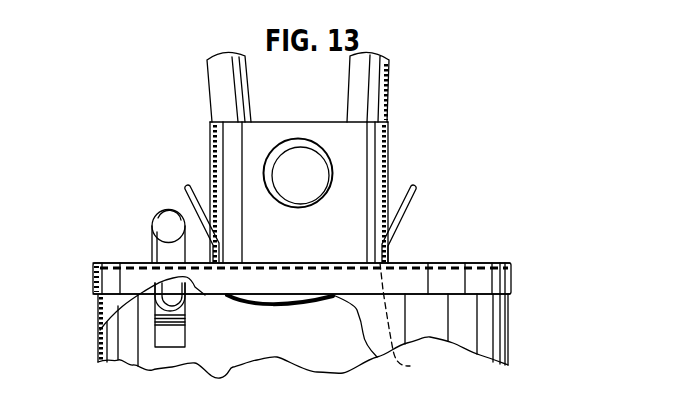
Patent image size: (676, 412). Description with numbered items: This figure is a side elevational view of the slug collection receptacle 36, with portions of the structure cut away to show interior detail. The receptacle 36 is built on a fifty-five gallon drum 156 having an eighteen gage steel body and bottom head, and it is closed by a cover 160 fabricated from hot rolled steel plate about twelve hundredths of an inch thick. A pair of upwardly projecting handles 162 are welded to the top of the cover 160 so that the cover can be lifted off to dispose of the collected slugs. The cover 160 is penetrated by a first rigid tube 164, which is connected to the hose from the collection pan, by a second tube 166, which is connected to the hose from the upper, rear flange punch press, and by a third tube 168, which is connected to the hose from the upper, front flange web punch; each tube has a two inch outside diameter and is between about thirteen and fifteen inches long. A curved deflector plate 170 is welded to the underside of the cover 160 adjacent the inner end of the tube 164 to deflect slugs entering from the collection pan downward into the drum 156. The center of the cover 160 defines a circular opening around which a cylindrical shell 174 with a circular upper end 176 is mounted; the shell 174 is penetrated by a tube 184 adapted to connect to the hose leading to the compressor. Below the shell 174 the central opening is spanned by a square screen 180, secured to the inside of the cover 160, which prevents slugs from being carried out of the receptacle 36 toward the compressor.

The slug collection receptacle 36 is at (523, 259).
The 55 gallon drum 156 is at (508, 327).
The cover 160 is at (457, 273).
The handles 162 is at (183, 192).
The first rigid tube 164 is at (152, 242).
The second tube 166 is at (225, 87).
The third tube 168 is at (388, 87).
The curved deflector plate 170 is at (187, 327).
The cylindrical shell 174 is at (388, 148).
The circular upper end 176 is at (305, 122).
The square screen 180 is at (416, 323).
The tube 184 is at (268, 160).